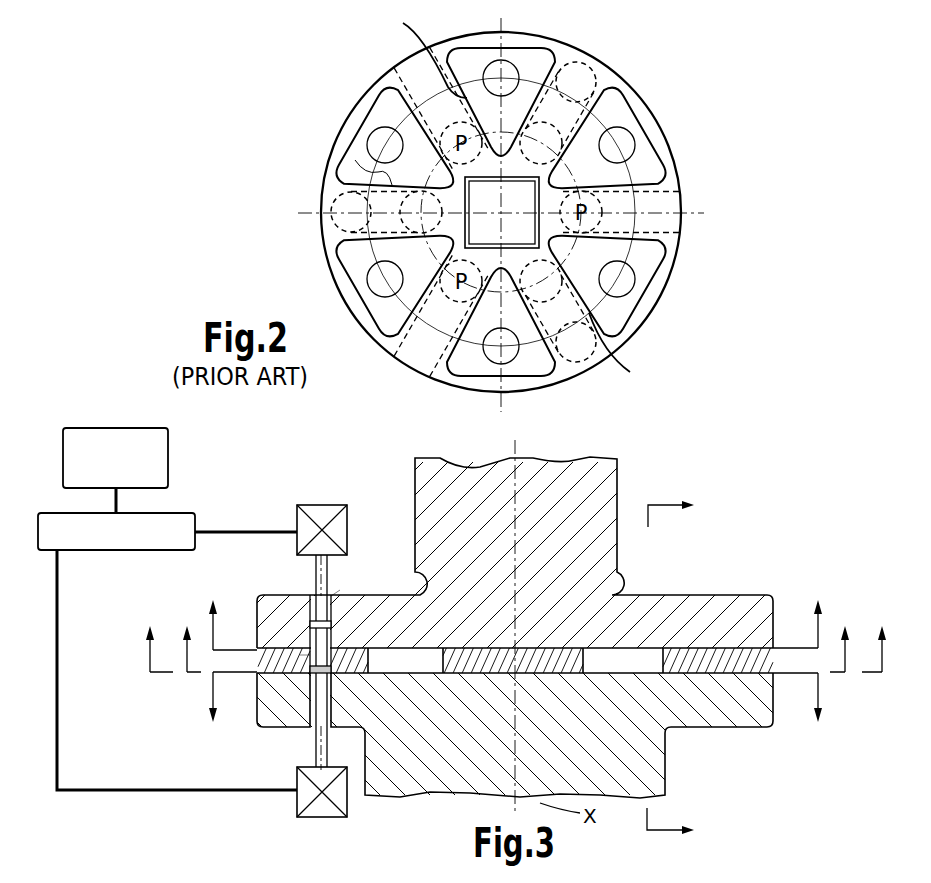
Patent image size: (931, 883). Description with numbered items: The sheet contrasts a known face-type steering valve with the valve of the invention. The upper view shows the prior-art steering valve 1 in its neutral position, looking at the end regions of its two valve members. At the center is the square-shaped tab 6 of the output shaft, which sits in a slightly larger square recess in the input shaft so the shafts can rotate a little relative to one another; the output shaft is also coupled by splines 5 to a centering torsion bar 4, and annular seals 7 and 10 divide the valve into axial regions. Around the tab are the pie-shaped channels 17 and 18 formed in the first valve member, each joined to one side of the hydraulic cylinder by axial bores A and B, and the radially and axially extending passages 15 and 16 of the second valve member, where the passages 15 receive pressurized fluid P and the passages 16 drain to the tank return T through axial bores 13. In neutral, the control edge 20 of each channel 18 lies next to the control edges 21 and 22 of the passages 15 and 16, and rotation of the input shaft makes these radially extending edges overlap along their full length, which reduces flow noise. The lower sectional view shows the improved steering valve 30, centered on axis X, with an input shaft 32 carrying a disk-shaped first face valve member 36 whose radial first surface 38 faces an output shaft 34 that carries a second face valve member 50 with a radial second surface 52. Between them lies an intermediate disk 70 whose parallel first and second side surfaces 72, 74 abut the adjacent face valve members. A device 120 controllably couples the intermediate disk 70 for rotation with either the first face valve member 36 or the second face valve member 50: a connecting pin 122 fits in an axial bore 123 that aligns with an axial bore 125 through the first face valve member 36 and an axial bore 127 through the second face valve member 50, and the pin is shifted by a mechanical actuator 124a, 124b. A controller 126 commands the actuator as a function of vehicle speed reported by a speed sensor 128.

In FIG. 2, the steering valve 1 is at (726, 151).
In FIG. 2, the square-shaped tab 6 is at (475, 233).
In FIG. 3, the square-shaped tab 6 is at (517, 733).
In FIG. 2, the axial bores 13 is at (402, 222).
In FIG. 2, the passages 15 is at (400, 68).
In FIG. 2, the passages 16 is at (338, 200).
In FIG. 2, the pie-shaped channel 17 is at (530, 63).
In FIG. 2, the pie-shaped channel 18 is at (358, 167).
In FIG. 2, the control edge 20 is at (392, 190).
In FIG. 2, the control edge 21 is at (463, 100).
In FIG. 2, the control edge 22 is at (583, 316).
In FIG. 3, the steering valve 30 is at (757, 502).
In FIG. 3, the input shaft 32 is at (453, 510).
In FIG. 3, the output shaft 34 is at (376, 758).
In FIG. 3, the first face valve member 36 is at (760, 620).
In FIG. 3, the first surface 38 is at (655, 712).
In FIG. 3, the second face valve member 50 is at (740, 700).
In FIG. 3, the second surface 52 is at (643, 655).
In FIG. 3, the intermediate disk 70 is at (293, 657).
In FIG. 3, the first side surface 72 is at (560, 650).
In FIG. 3, the second side surface 74 is at (481, 675).
In FIG. 3, the device 120 is at (318, 498).
In FIG. 3, the connecting pin 122 is at (315, 637).
In FIG. 3, the axially extending bore 123 is at (307, 660).
In FIG. 3, the mechanical actuator 124a is at (293, 517).
In FIG. 3, the mechanical actuator 124b is at (321, 818).
In FIG. 3, the axially extending bore 125 is at (335, 600).
In FIG. 3, the controller 126 is at (168, 511).
In FIG. 3, the axially extending bore 127 is at (312, 713).
In FIG. 3, the speed sensor 128 is at (152, 427).
In FIG. 3, the torsion bar 4 is at (516, 651).
In FIG. 3, the splines 5 is at (517, 615).
In FIG. 3, the annular seal 7 is at (518, 615).
In FIG. 3, the annular seal 10 is at (685, 670).